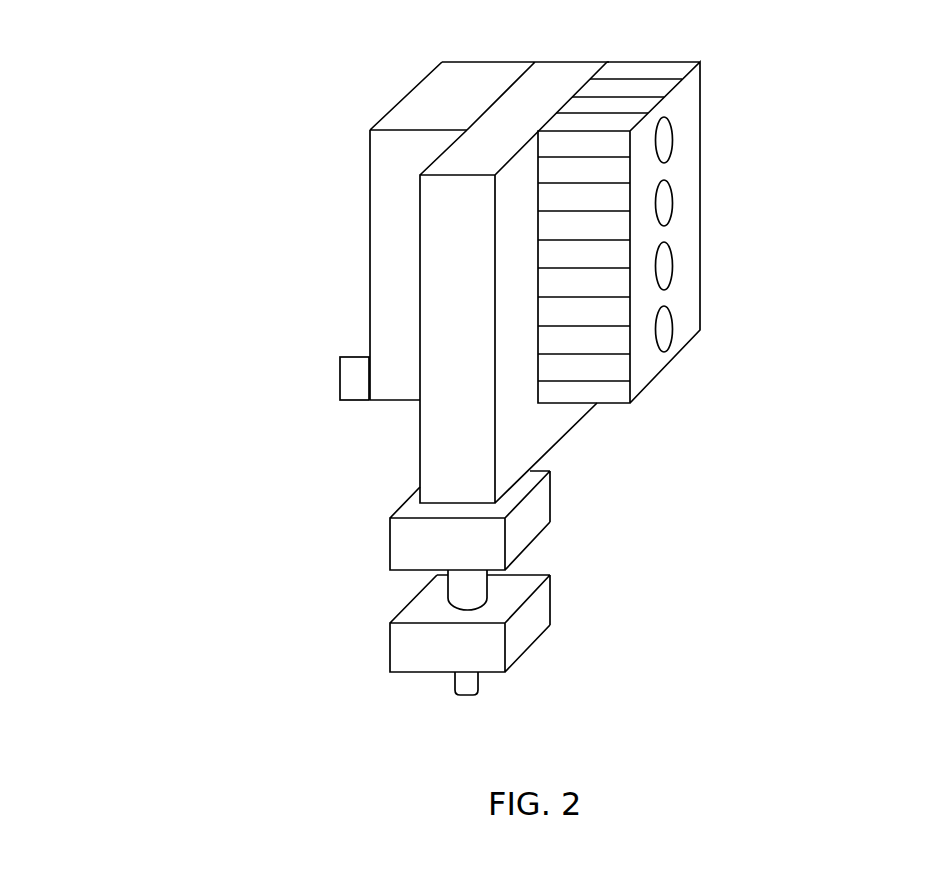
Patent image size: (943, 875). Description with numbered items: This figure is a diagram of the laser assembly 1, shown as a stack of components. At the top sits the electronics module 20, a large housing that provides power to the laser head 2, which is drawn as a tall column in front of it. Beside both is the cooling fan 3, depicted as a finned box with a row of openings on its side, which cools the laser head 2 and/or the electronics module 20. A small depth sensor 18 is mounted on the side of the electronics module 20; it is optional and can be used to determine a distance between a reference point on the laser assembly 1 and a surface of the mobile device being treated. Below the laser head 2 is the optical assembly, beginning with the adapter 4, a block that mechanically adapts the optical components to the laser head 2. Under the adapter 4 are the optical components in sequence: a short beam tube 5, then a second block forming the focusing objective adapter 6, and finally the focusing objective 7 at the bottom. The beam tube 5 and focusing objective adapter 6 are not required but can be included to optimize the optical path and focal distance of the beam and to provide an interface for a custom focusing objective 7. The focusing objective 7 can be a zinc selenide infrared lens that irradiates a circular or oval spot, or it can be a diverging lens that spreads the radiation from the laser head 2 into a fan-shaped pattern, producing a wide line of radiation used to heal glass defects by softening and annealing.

The laser assembly 1 is at (199, 106).
The laser head 2 is at (450, 473).
The cooling fan 3 is at (683, 227).
The adapter 4 is at (533, 508).
The beam tube 5 is at (467, 588).
The focusing objective adapter 6 is at (527, 627).
The focusing objective 7 is at (485, 685).
The depth sensor 18 is at (348, 378).
The electronics module 20 is at (388, 183).